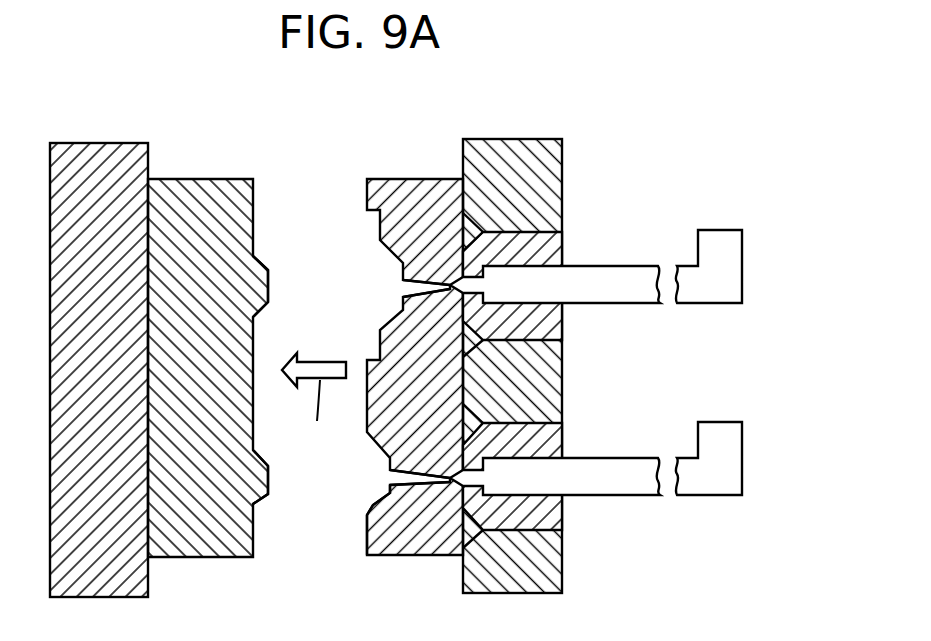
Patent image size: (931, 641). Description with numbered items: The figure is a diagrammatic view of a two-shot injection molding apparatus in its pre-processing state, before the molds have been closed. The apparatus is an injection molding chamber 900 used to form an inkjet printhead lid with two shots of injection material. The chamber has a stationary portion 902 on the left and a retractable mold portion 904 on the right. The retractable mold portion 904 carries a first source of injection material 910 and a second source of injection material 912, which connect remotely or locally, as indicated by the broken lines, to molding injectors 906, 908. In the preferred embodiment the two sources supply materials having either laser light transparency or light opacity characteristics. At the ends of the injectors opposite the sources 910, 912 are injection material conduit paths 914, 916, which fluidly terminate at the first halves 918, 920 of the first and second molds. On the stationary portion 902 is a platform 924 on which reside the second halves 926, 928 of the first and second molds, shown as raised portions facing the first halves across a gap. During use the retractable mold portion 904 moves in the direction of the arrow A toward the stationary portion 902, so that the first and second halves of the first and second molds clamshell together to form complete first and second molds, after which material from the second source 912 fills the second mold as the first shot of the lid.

The injection molding chamber 900 is at (641, 121).
The stationary portion 902 is at (97, 141).
The retractable mold portion 904 is at (510, 139).
The molding injector 906 is at (600, 265).
The molding injector 908 is at (600, 457).
The first source of injection material 910 is at (733, 258).
The second source of injection material 912 is at (733, 451).
The injection material conduit path 914 is at (442, 286).
The injection material conduit path 916 is at (402, 474).
The first half of first mold 918 is at (392, 253).
The first half of second mold 920 is at (373, 505).
The platform 924 is at (215, 178).
The second half of first mold 926 is at (257, 256).
The second half of second mold 928 is at (259, 504).